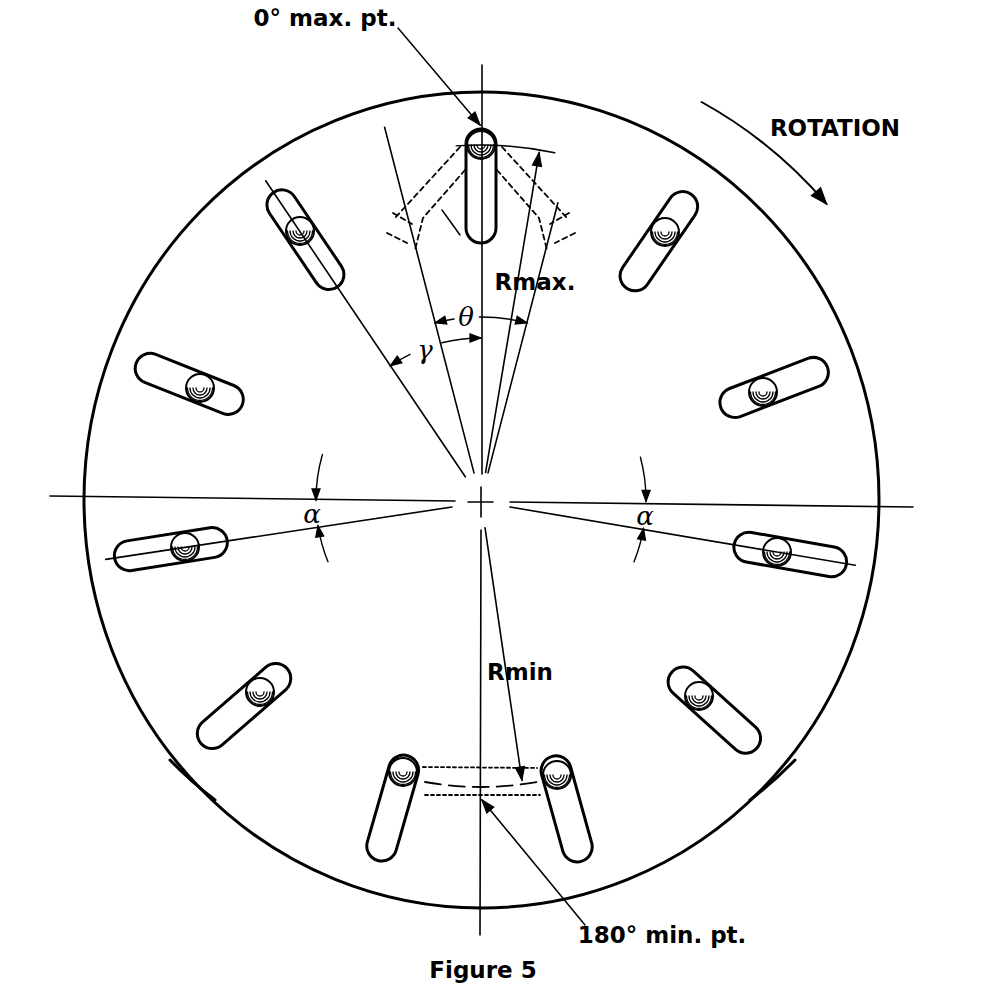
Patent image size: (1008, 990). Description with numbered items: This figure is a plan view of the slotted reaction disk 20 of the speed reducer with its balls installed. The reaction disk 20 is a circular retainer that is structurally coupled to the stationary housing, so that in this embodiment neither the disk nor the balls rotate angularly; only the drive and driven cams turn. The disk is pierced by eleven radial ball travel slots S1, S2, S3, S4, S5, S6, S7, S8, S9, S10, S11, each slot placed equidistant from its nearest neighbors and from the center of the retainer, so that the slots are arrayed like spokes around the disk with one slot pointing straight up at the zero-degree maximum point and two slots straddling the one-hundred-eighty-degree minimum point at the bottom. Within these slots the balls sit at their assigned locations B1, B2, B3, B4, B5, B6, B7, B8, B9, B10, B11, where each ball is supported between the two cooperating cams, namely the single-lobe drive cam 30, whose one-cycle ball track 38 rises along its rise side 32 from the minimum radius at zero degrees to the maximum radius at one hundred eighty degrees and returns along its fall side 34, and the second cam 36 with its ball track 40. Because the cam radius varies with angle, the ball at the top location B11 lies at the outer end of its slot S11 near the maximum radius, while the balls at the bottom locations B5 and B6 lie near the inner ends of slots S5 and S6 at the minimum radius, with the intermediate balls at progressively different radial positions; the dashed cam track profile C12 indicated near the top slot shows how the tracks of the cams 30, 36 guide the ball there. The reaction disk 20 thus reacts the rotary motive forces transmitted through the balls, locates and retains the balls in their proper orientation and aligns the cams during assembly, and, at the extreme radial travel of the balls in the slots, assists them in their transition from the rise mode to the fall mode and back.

The reaction disk 20 is at (197, 215).
The rise side 32 is at (192, 780).
The fall side 34 is at (775, 778).
The cam 36 is at (428, 161).
The ball track 40 is at (447, 185).
The cam 30 is at (419, 857).
The ball track 38 is at (432, 787).
The cam track C12 is at (510, 190).
The radial ball travel slot S1 is at (305, 251).
The radial ball travel slot S2 is at (206, 387).
The radial ball travel slot S3 is at (189, 551).
The radial ball travel slot S4 is at (261, 705).
The radial ball travel slot S5 is at (397, 794).
The radial ball travel slot S6 is at (565, 793).
The radial ball travel slot S7 is at (699, 710).
The radial ball travel slot S8 is at (771, 554).
The radial ball travel slot S9 is at (756, 389).
The radial ball travel slot S10 is at (658, 253).
The radial ball travel slot S11 is at (483, 199).
The ball location B1 is at (316, 221).
The ball location B2 is at (209, 372).
The ball location B3 is at (182, 533).
The ball location B4 is at (246, 680).
The ball location B5 is at (380, 772).
The ball location B6 is at (578, 774).
The ball location B7 is at (716, 684).
The ball location B8 is at (786, 536).
The ball location B9 is at (756, 374).
The ball location B10 is at (641, 220).
The ball location B11 is at (510, 136).